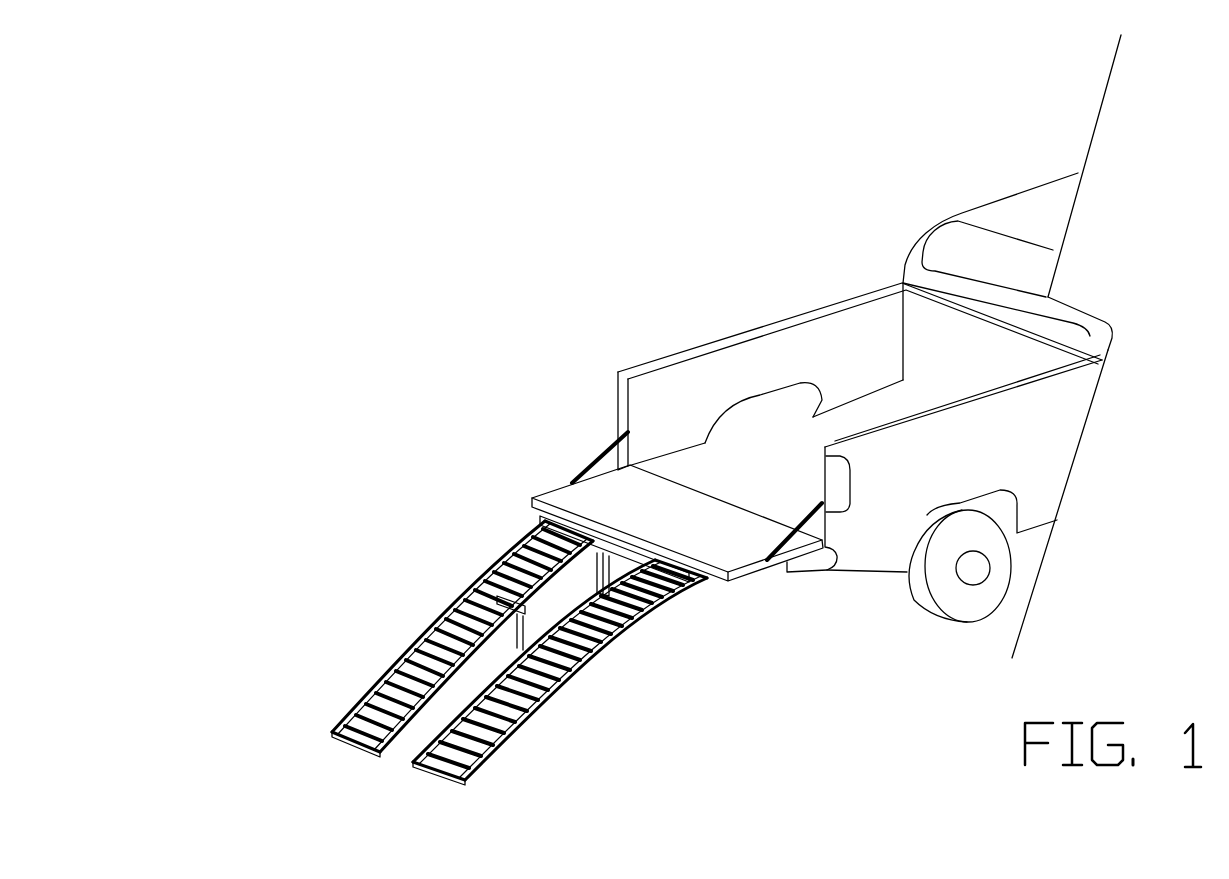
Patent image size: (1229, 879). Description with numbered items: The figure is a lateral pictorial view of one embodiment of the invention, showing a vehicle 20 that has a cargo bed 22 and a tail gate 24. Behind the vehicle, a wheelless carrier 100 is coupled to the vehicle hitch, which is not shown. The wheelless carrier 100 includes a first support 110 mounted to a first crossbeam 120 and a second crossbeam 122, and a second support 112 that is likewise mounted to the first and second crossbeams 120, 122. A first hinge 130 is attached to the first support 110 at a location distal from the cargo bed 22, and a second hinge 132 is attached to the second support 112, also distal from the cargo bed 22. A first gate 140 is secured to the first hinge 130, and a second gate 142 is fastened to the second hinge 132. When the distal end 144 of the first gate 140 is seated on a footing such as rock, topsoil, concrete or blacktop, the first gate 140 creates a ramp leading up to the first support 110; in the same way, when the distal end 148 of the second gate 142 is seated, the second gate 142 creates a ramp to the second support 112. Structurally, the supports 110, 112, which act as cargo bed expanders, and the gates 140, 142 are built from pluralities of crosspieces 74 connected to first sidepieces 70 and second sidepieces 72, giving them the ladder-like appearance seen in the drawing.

The vehicle 20 is at (1018, 207).
The cargo bed 22 is at (870, 405).
The tail gate 24 is at (571, 495).
The first sidepieces 70 is at (560, 689).
The second sidepieces 72 is at (533, 702).
The crosspieces 74 is at (612, 620).
The wheelless carrier 100 is at (384, 556).
The first support 110 is at (419, 626).
The second support 112 is at (690, 583).
The first crossbeam 120 is at (546, 525).
The second crossbeam 122 is at (605, 638).
The first hinge 130 is at (453, 592).
The second hinge 132 is at (587, 643).
The first gate 140 is at (393, 658).
The second gate 142 is at (505, 722).
The distal end of first gate 144 is at (340, 745).
The distal end of second gate 148 is at (467, 779).